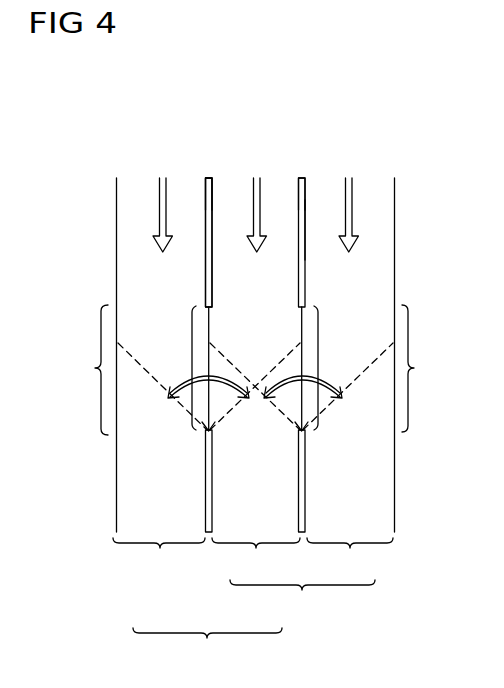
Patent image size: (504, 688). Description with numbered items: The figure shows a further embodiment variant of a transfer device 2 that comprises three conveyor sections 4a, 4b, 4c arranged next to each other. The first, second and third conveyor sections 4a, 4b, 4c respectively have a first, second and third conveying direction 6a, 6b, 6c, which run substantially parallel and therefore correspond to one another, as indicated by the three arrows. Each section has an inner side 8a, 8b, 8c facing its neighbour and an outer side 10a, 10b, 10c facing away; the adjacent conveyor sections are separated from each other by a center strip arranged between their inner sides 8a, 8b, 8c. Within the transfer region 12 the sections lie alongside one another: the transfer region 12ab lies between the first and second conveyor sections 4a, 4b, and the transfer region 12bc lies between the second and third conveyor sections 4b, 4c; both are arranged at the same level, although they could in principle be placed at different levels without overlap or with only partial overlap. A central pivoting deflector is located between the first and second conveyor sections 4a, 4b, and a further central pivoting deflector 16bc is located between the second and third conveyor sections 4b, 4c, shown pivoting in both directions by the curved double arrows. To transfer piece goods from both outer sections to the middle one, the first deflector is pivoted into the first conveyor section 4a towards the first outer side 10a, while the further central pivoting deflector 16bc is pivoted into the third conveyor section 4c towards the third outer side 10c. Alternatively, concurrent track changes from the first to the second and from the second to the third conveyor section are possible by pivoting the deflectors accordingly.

The transfer device 2 is at (68, 128).
The first conveyor section 4a is at (159, 561).
The second conveyor section 4b is at (256, 561).
The third conveyor section 4c is at (350, 561).
The first conveying direction 6a is at (158, 221).
The second conveying direction 6b is at (261, 224).
The third conveying direction 6c is at (353, 224).
The first inner side 8a is at (205, 203).
The second inner side 8b is at (213, 226).
The third inner side 8c is at (315, 233).
The first outer side 10a is at (117, 197).
The second outer side 10b is at (299, 179).
The third outer side 10c is at (394, 192).
The transfer region 12 is at (72, 370).
The transfer region between first and second conveyor sections 12ab is at (207, 653).
The transfer region between second and third conveyor sections 12bc is at (302, 603).
The further central pivoting deflector 16bc is at (306, 381).